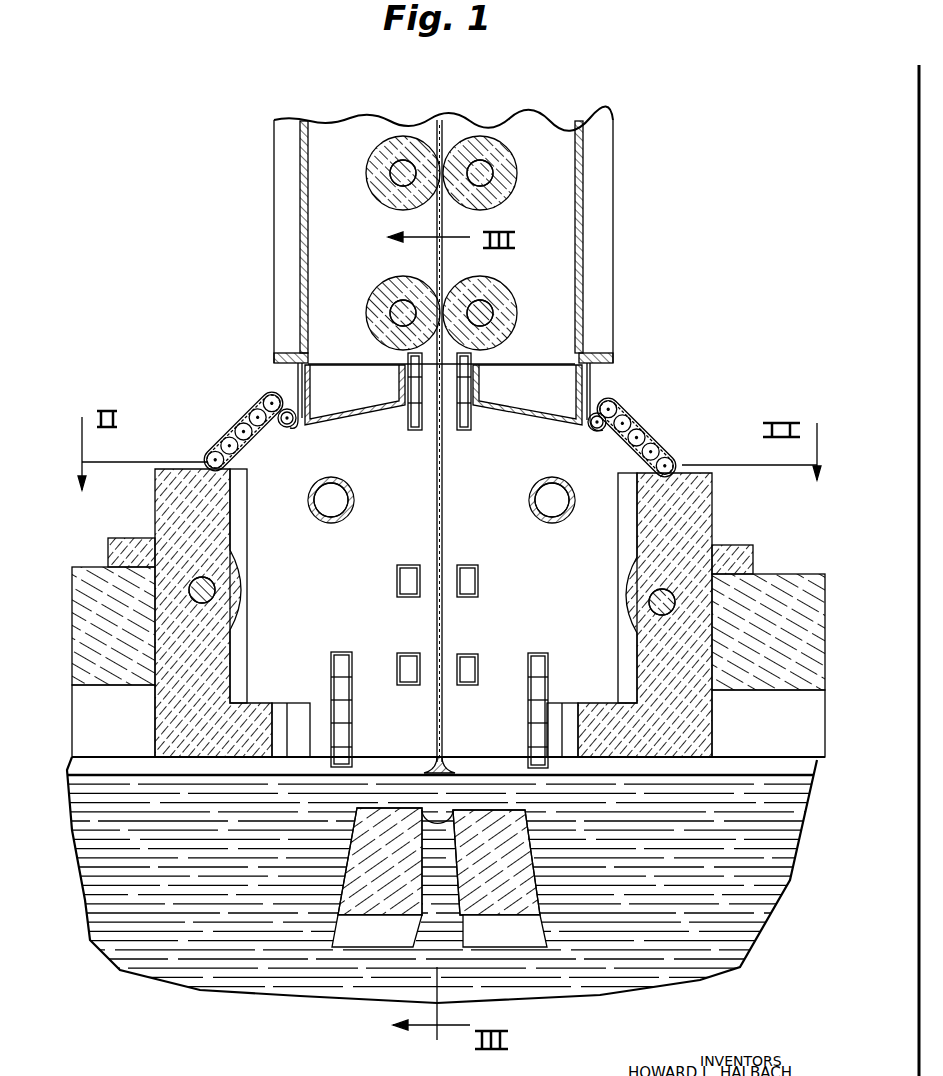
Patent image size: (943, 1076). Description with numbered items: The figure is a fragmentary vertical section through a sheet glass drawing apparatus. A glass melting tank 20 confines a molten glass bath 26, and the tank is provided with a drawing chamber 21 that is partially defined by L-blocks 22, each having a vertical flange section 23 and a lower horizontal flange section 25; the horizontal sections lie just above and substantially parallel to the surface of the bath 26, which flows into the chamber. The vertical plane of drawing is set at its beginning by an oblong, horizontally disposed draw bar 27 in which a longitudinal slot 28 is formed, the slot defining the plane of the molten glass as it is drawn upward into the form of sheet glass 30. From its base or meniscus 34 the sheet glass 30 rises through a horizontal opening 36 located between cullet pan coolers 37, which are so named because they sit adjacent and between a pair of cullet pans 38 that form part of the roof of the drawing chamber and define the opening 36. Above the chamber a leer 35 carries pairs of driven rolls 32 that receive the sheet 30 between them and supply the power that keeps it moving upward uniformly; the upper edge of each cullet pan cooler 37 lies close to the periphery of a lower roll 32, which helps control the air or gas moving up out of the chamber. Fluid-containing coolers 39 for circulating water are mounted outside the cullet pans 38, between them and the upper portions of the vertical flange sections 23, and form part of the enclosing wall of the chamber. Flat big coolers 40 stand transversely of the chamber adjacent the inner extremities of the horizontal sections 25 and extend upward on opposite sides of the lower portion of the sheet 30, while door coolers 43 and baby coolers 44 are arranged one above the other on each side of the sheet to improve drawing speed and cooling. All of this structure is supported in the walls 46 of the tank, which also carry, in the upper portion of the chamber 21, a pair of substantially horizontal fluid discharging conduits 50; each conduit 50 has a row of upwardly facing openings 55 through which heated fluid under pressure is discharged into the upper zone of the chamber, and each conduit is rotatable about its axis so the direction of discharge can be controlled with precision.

The glass melting tank 20 is at (92, 566).
The drawing chamber 21 is at (340, 583).
The L-block 22 is at (155, 505).
The vertical flange section 23 is at (236, 546).
The lower horizontal flange section 25 is at (259, 705).
The molten glass bath 26 is at (215, 985).
The draw bar 27 is at (352, 947).
The slot 28 is at (439, 861).
The sheet glass 30 is at (443, 515).
The driven rolls 32 is at (433, 150).
The meniscus 34 is at (448, 770).
The leer 35 is at (616, 184).
The opening 36 is at (430, 418).
The cullet pan cooler 37 is at (472, 362).
The cullet pan 38 is at (300, 380).
The fluid-containing cooler 39 is at (243, 422).
The big cooler 40 is at (352, 719).
The door cooler 43 is at (478, 576).
The baby cooler 44 is at (420, 662).
The tank walls 46 is at (790, 574).
The fluid discharging conduit 50 is at (354, 500).
The openings 55 is at (334, 477).